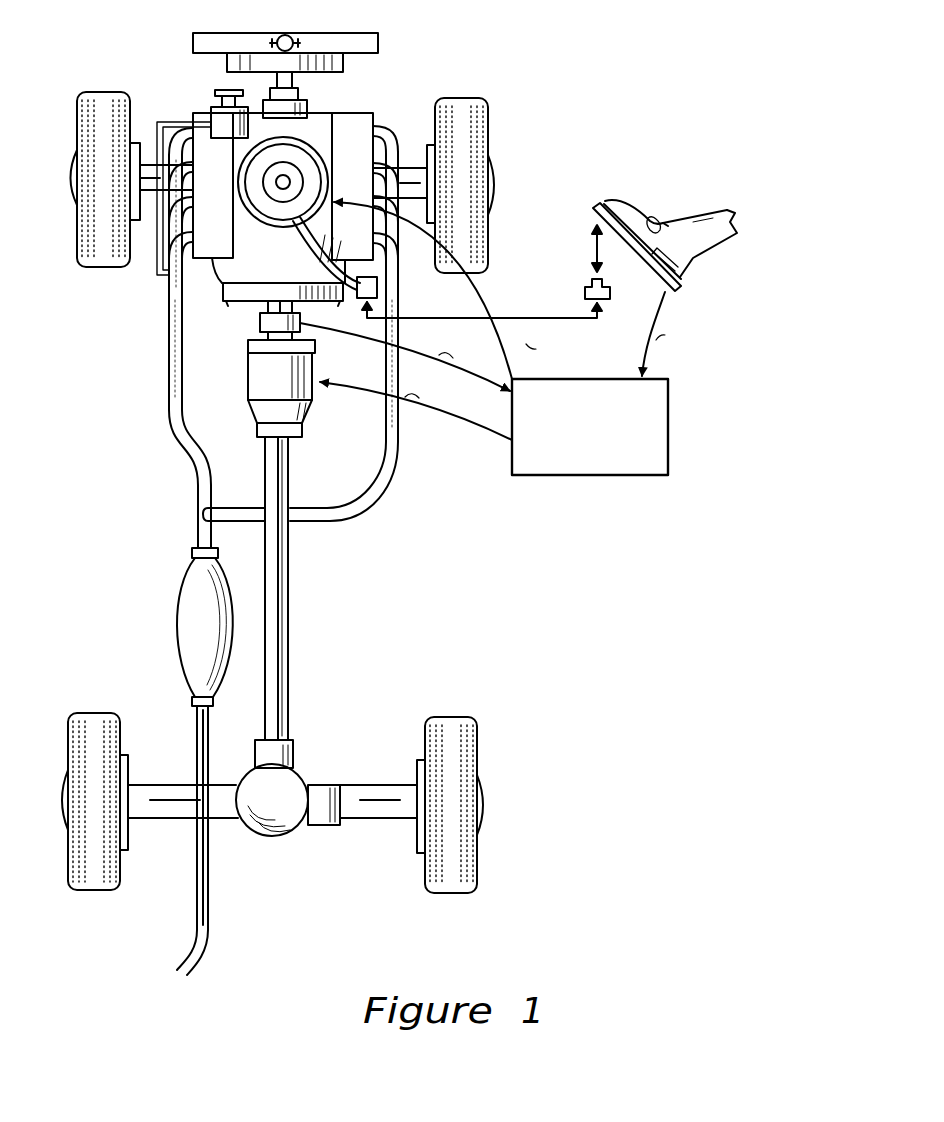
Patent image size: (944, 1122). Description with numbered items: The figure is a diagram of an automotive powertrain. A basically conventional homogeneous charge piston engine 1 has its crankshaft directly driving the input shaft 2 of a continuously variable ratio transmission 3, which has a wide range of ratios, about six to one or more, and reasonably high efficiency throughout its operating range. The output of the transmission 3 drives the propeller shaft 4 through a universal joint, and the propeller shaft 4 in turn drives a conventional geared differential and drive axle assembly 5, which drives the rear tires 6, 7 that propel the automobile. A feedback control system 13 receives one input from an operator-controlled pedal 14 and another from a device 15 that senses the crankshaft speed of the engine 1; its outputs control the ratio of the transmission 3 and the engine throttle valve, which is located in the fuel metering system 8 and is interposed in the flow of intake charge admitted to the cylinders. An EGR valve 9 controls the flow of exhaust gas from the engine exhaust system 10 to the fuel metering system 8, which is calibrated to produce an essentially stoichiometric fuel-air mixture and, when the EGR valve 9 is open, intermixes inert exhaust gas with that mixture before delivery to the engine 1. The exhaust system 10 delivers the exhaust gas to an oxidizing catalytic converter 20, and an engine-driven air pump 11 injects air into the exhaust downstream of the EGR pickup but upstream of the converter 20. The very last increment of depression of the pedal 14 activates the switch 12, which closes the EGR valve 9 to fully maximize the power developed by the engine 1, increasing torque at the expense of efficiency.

The homogeneous charge piston engine 1 is at (318, 112).
The input shaft 2 is at (266, 308).
The continuously variable ratio transmission 3 is at (263, 377).
The propeller shaft 4 is at (289, 567).
The geared differential and drive axle assembly 5 is at (292, 790).
The rear tire 6 is at (85, 737).
The rear tire 7 is at (462, 731).
The fuel metering system 8 is at (287, 221).
The EGR valve 9 is at (378, 290).
The engine exhaust system 10 is at (193, 470).
The engine-driven air pump 11 is at (223, 116).
The switch 12 is at (585, 292).
The feedback control system 13 is at (656, 427).
The pedal 14 is at (593, 209).
The crankshaft speed sensing device 15 is at (261, 325).
The oxidizing catalytic converter 20 is at (193, 600).